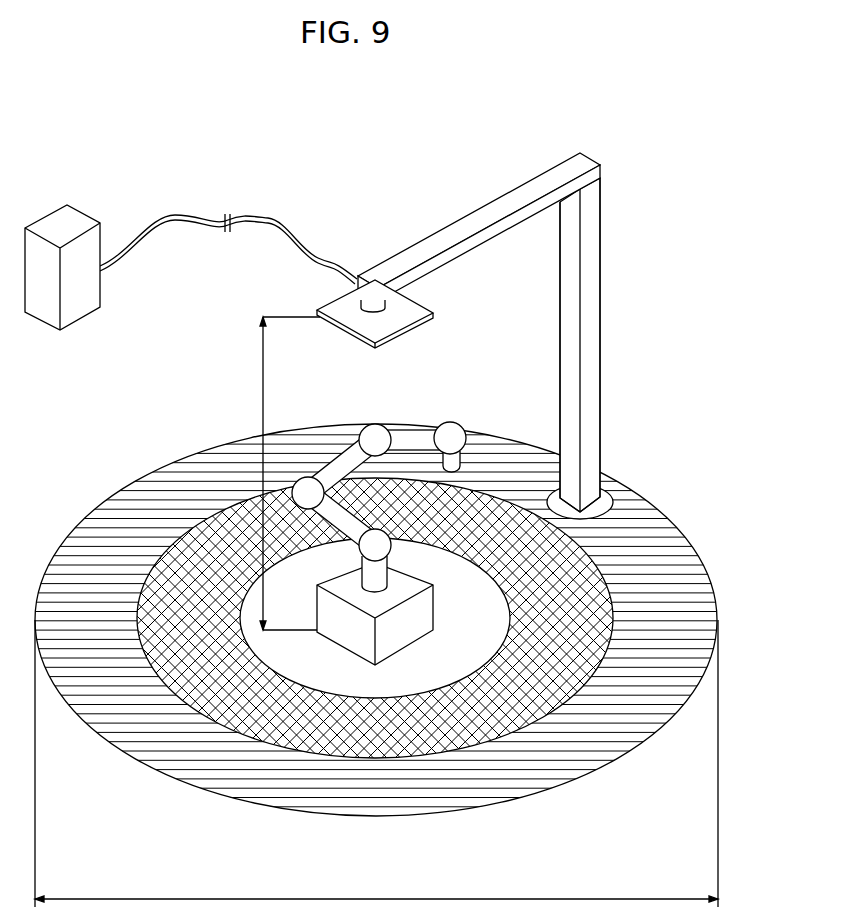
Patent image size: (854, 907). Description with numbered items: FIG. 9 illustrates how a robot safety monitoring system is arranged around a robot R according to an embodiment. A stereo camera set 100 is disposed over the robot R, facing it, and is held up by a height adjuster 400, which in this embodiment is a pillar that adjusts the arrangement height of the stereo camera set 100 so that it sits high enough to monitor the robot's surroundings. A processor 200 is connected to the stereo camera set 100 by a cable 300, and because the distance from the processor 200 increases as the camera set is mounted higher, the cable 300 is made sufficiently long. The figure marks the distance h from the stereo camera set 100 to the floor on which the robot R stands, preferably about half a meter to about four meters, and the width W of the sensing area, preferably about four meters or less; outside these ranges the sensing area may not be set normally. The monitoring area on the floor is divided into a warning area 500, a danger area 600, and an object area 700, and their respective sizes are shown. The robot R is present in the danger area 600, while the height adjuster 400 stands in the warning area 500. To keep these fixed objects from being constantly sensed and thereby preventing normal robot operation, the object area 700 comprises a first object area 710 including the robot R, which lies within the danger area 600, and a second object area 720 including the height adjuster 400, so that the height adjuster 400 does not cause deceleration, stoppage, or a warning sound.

The stereo camera set 100 is at (333, 328).
The processor 200 is at (50, 222).
The cable 300 is at (177, 217).
The height adjuster 400 is at (600, 347).
The warning area 500 is at (553, 787).
The danger area 600 is at (567, 708).
The object area 700 is at (751, 502).
The first object area 710 is at (507, 598).
The second object area 720 is at (617, 495).
The robot R is at (413, 438).
The distance to the floor h is at (283, 473).
The width of the sensing area W is at (376, 763).